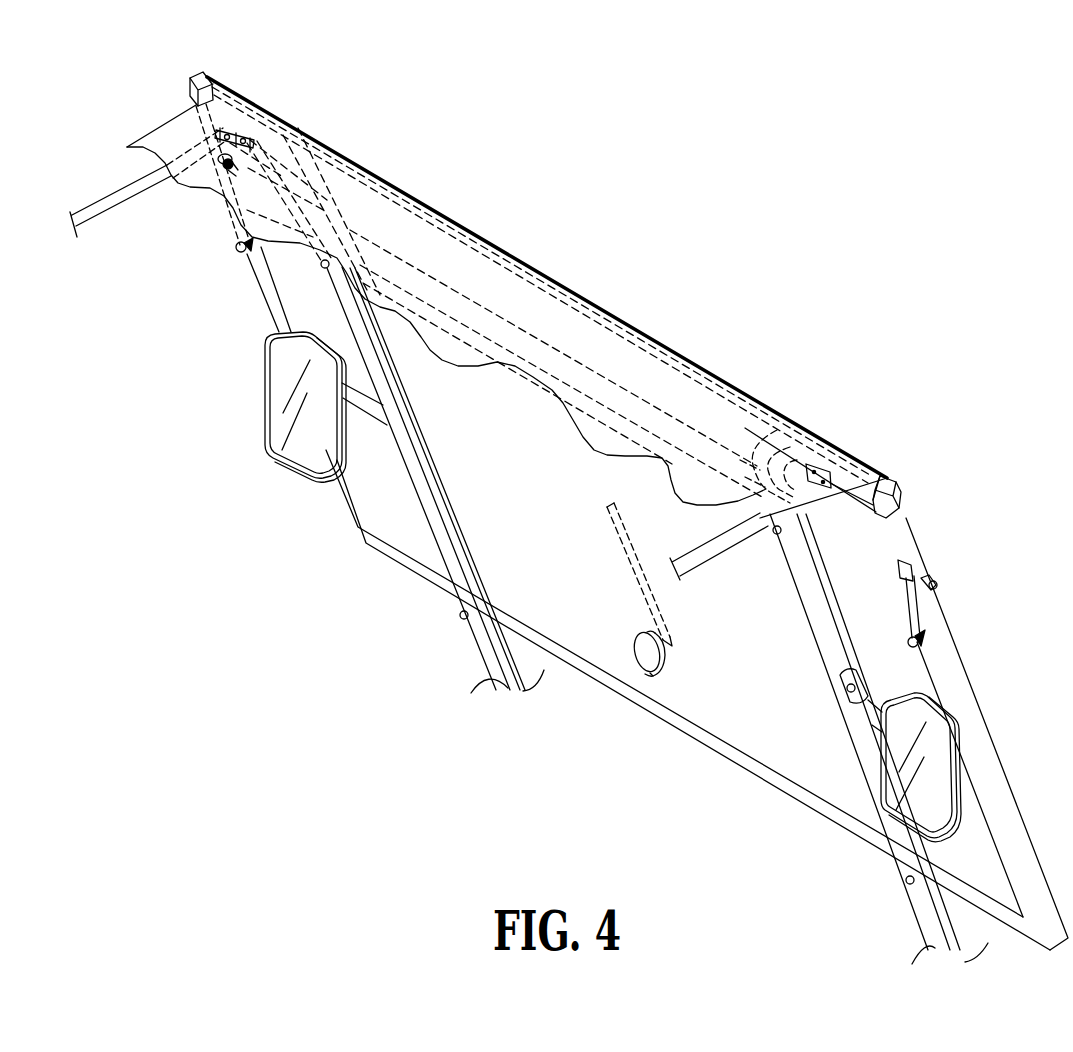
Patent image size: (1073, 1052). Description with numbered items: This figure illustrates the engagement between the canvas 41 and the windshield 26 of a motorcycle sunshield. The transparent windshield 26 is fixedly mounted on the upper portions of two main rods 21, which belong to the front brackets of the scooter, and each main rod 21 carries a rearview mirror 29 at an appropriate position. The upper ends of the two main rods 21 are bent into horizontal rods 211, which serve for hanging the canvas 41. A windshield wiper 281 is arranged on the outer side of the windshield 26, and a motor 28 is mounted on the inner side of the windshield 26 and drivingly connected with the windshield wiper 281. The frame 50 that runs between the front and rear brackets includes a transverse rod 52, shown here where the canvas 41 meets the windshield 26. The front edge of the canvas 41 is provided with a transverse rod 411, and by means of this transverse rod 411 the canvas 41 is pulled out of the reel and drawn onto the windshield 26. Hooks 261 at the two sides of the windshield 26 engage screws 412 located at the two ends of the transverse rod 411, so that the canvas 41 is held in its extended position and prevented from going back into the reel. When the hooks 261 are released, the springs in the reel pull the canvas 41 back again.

The horizontal rod 211 is at (193, 93).
The canvas 41 is at (167, 137).
The frame 50 is at (100, 210).
The transverse rod 411 is at (910, 567).
The screw 412 is at (228, 172).
The hook 261 is at (977, 627).
The windshield 26 is at (758, 743).
The main rod 21 is at (462, 593).
The rearview mirror 29 is at (285, 450).
The transverse rod 52 is at (768, 410).
The motor 28 is at (648, 663).
The windshield wiper 281 is at (640, 580).